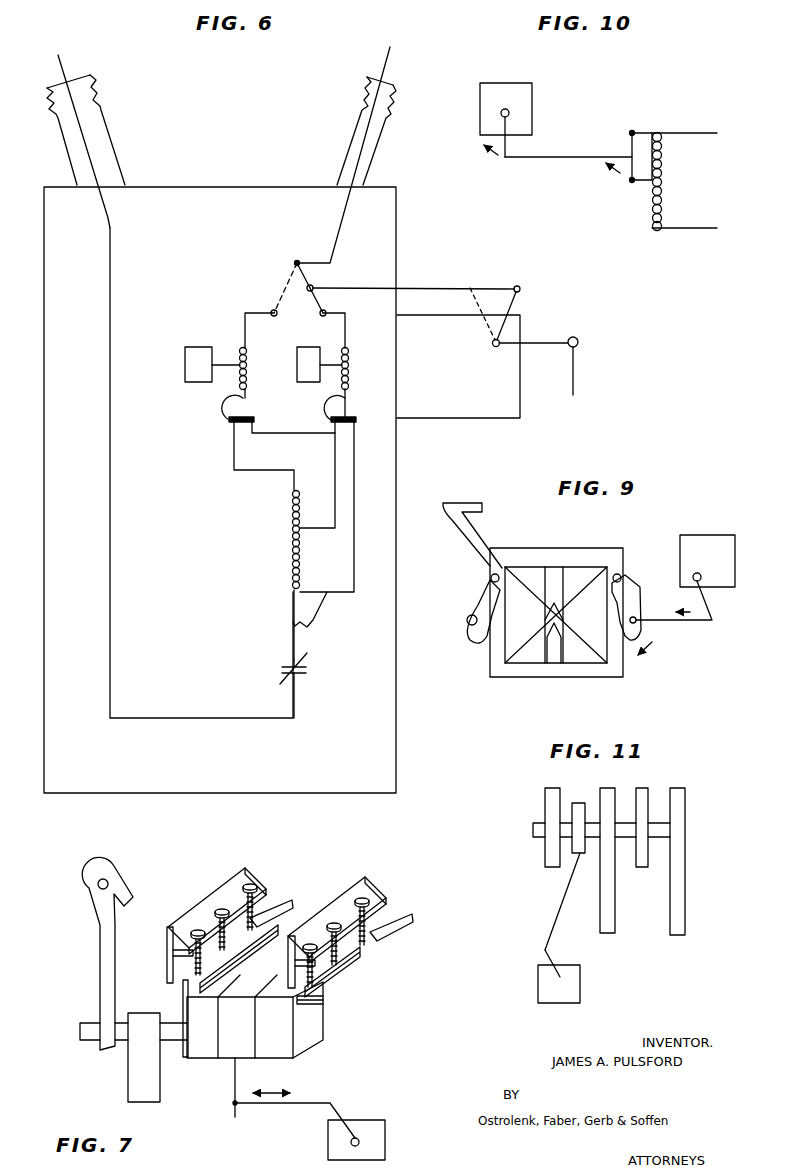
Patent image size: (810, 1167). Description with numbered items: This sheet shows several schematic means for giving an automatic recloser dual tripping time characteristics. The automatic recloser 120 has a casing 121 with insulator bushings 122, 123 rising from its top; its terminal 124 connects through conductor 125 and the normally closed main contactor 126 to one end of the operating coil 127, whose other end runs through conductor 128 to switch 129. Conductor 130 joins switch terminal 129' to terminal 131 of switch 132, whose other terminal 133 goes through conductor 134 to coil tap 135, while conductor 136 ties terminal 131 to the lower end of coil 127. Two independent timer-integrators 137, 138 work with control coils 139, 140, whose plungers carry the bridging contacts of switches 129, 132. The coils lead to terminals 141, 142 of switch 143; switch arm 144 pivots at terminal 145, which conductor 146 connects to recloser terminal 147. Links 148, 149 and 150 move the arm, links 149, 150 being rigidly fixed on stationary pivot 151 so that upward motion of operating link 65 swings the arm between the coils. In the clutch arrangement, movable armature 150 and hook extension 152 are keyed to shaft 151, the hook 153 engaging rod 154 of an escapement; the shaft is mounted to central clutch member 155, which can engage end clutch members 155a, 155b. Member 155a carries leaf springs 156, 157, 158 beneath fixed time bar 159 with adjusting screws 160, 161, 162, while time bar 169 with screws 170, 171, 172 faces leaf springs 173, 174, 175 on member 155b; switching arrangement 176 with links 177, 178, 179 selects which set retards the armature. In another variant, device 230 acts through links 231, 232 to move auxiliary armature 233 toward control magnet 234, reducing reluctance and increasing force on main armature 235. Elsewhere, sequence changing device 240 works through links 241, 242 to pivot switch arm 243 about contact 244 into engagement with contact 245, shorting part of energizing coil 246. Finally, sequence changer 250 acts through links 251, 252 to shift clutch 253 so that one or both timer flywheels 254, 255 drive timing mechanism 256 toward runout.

In FIG. 6, the operating link 65 is at (573, 382).
In FIG. 6, the automatic recloser 120 is at (405, 230).
In FIG. 6, the casing 121 is at (397, 262).
In FIG. 6, the insulator bushing 122 is at (112, 136).
In FIG. 6, the insulator bushing 123 is at (380, 149).
In FIG. 6, the terminal 124 is at (60, 60).
In FIG. 6, the conductor 125 is at (112, 580).
In FIG. 6, the main contactor 126 is at (307, 675).
In FIG. 6, the operating coil 127 is at (292, 578).
In FIG. 6, the conductor 128 is at (263, 472).
In FIG. 6, the switch 129 is at (215, 425).
In FIG. 6, the switch terminal 129' is at (274, 410).
In FIG. 6, the conductor 130 is at (318, 437).
In FIG. 6, the terminal 131 is at (357, 423).
In FIG. 6, the switch 132 is at (354, 412).
In FIG. 6, the terminal 133 is at (332, 422).
In FIG. 6, the conductor 134 is at (334, 467).
In FIG. 6, the coil tap 135 is at (302, 530).
In FIG. 6, the conductor 136 is at (355, 573).
In FIG. 6, the timer-integrator 137 is at (183, 363).
In FIG. 6, the timer-integrator 138 is at (297, 358).
In FIG. 6, the control coil 139 is at (249, 378).
In FIG. 6, the control coil 140 is at (350, 360).
In FIG. 6, the terminal 141 is at (268, 303).
In FIG. 6, the terminal 142 is at (330, 310).
In FIG. 6, the switch 143 is at (283, 280).
In FIG. 6, the switch arm 144 is at (316, 281).
In FIG. 6, the terminal 145 is at (297, 258).
In FIG. 6, the conductor 146 is at (341, 226).
In FIG. 6, the recloser terminal 147 is at (386, 65).
In FIG. 6, the link 148 is at (438, 288).
In FIG. 6, the link 149 is at (518, 306).
In FIG. 6, the link 150 is at (547, 348).
In FIG. 7, the link 150 is at (128, 1077).
In FIG. 6, the stationary pivot 151 is at (493, 348).
In FIG. 7, the stationary pivot 151 is at (80, 1033).
In FIG. 7, the hook extension 152 is at (100, 975).
In FIG. 7, the hook 153 is at (77, 876).
In FIG. 7, the rod 154 is at (108, 882).
In FIG. 7, the central clutch member 155 is at (233, 1053).
In FIG. 7, the end clutch member 155a is at (193, 1052).
In FIG. 7, the end clutch member 155b is at (283, 1053).
In FIG. 7, the leaf spring 156 is at (212, 963).
In FIG. 7, the leaf spring 157 is at (228, 953).
In FIG. 7, the leaf spring 158 is at (268, 915).
In FIG. 7, the time bar 159 is at (264, 872).
In FIG. 7, the adjusting screw 160 is at (198, 930).
In FIG. 7, the adjusting screw 161 is at (222, 907).
In FIG. 7, the adjusting screw 162 is at (247, 883).
In FIG. 7, the time bar 169 is at (383, 883).
In FIG. 7, the adjusting screw 170 is at (313, 925).
In FIG. 7, the adjusting screw 171 is at (345, 898).
In FIG. 7, the adjusting screw 172 is at (367, 873).
In FIG. 7, the leaf spring 173 is at (323, 992).
In FIG. 7, the leaf spring 174 is at (350, 970).
In FIG. 7, the leaf spring 175 is at (383, 935).
In FIG. 7, the switching arrangement 176 is at (385, 1140).
In FIG. 7, the link 177 is at (363, 1104).
In FIG. 7, the link 178 is at (293, 1105).
In FIG. 7, the link 179 is at (235, 1075).
In FIG. 9, the device 230 is at (712, 535).
In FIG. 9, the link 231 is at (713, 608).
In FIG. 9, the link 232 is at (684, 622).
In FIG. 9, the auxiliary armature 233 is at (624, 576).
In FIG. 9, the control magnet 234 is at (548, 677).
In FIG. 9, the main armature 235 is at (465, 603).
In FIG. 10, the sequence changing device 240 is at (533, 97).
In FIG. 10, the link 241 is at (508, 148).
In FIG. 10, the link 242 is at (565, 160).
In FIG. 10, the switch arm 243 is at (632, 138).
In FIG. 10, the contact 244 is at (633, 132).
In FIG. 10, the contact 245 is at (627, 183).
In FIG. 10, the control magnet energizing coil 246 is at (663, 195).
In FIG. 11, the sequence changer 250 is at (582, 987).
In FIG. 11, the link 251 is at (552, 960).
In FIG. 11, the link 252 is at (557, 917).
In FIG. 11, the clutch 253 is at (578, 803).
In FIG. 11, the timer flywheel 254 is at (545, 862).
In FIG. 11, the timer flywheel 255 is at (643, 867).
In FIG. 11, the timing mechanism 256 is at (615, 923).